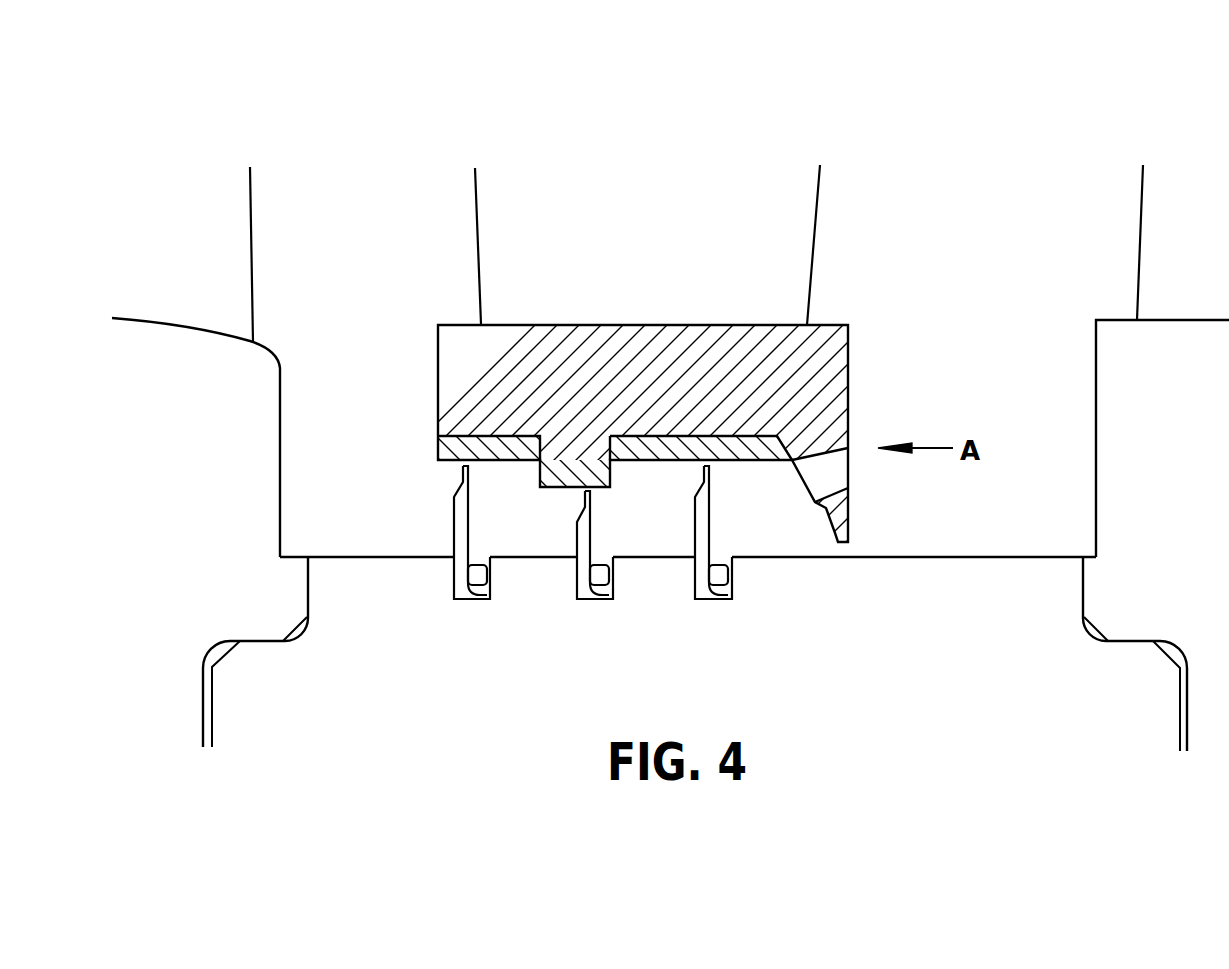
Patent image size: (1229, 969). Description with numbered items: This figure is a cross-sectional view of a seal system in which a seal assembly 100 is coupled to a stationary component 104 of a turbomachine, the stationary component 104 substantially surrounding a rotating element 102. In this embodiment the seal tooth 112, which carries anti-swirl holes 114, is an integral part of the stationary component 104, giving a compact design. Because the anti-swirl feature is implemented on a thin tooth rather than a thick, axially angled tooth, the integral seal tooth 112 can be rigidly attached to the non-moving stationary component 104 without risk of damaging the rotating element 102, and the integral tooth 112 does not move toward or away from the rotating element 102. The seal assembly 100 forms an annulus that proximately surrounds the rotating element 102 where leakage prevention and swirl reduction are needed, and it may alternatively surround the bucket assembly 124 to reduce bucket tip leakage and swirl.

The seal assembly 100 is at (158, 144).
The rotating element 102 is at (650, 673).
The stationary component 104 is at (658, 81).
The seal tooth 112 is at (848, 428).
The anti-swirl holes 114 is at (842, 468).
The bucket assembly 124 is at (810, 276).